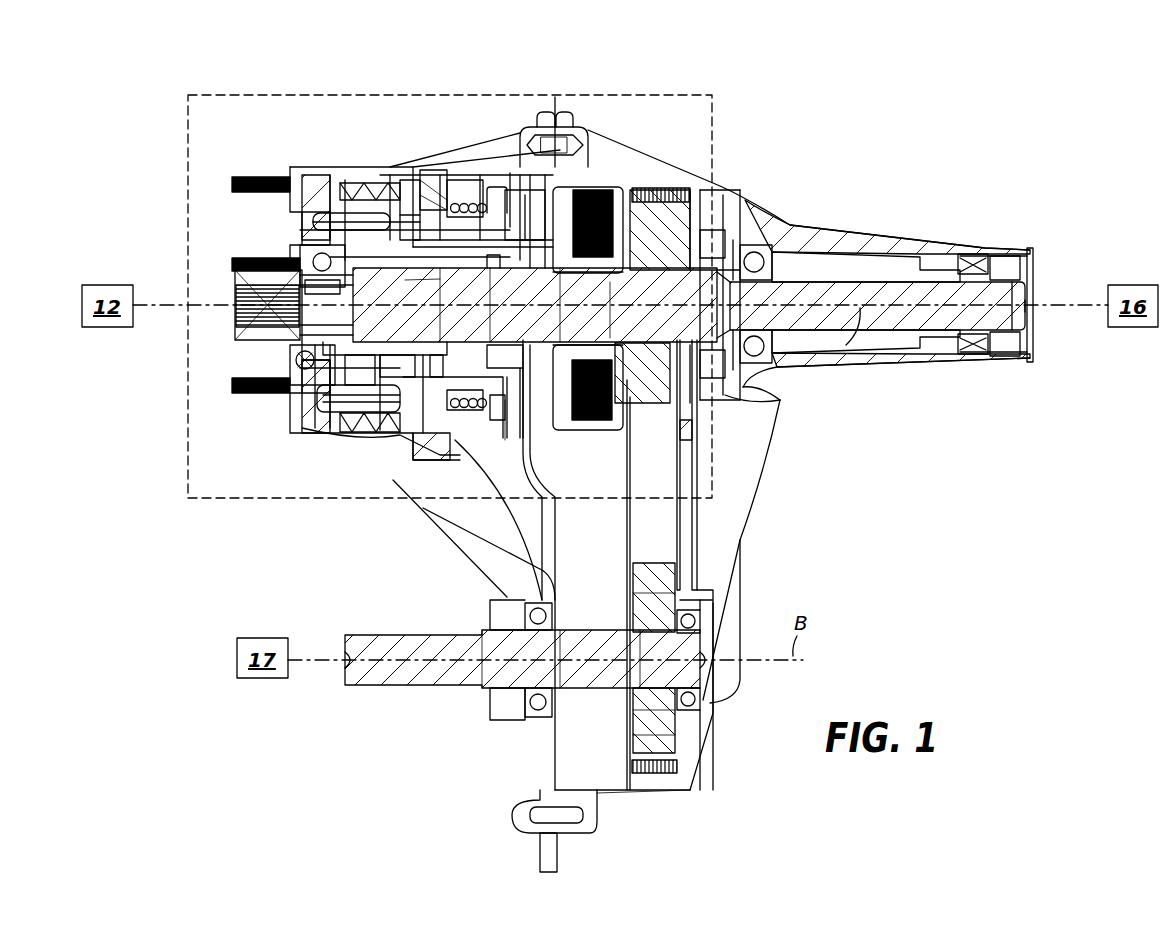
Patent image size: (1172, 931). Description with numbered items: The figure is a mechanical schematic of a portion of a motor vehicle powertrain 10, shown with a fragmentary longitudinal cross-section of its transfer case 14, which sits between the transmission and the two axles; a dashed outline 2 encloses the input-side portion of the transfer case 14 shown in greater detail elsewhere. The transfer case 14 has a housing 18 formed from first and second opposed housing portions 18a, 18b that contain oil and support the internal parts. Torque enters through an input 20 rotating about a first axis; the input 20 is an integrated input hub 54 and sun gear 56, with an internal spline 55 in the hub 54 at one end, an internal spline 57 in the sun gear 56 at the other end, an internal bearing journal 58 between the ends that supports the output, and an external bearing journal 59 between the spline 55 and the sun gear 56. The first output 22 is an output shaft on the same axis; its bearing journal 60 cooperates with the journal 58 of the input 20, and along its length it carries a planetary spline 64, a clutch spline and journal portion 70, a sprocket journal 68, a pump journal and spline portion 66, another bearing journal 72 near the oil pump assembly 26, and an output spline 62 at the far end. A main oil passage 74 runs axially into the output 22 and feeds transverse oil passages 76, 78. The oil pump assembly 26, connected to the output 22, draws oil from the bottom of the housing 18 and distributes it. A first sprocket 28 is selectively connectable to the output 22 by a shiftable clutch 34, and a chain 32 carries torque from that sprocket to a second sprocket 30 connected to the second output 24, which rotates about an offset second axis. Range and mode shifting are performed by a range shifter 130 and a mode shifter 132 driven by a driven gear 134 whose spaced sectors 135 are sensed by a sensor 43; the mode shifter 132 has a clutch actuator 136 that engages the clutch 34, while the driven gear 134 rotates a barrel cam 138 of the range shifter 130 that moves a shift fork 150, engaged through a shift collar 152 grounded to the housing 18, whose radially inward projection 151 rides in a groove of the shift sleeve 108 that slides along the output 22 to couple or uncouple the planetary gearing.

The gear assembly 2 is at (186, 150).
The motor vehicle powertrain 10 is at (1008, 118).
The transfer case 14 is at (830, 178).
The housing 18 is at (555, 108).
The first housing portion 18a is at (545, 122).
The second housing portion 18b is at (567, 122).
The input 20 is at (233, 343).
The first output 22 is at (1028, 290).
The second output 24 is at (345, 685).
The oil pump assembly 26 is at (720, 213).
The first sprocket 28 is at (645, 223).
The second sprocket 30 is at (665, 740).
The chain 32 is at (660, 200).
The clutch 34 is at (584, 185).
The vehicle sensor 43 is at (483, 200).
The input hub 54 is at (313, 265).
The internal spline 55 is at (245, 310).
The sun gear 56 is at (358, 357).
The internal spline 57 is at (353, 360).
The internal bearing journal 58 is at (320, 325).
The external bearing journal 59 is at (313, 287).
The bearing journal 60 is at (347, 360).
The output spline 62 is at (1000, 330).
The planetary spline 64 is at (367, 280).
The pump journal and spline portion 66 is at (720, 277).
The sprocket journal 68 is at (668, 365).
The clutch spline and journal portion 70 is at (597, 333).
The bearing journal 72 is at (757, 335).
The main oil passage 74 is at (742, 345).
The transverse oil passage 76 is at (392, 283).
The transverse oil passage 78 is at (612, 290).
The shift sleeve 108 is at (393, 350).
The range shifter 130 is at (453, 442).
The mode shifter 132 is at (537, 407).
The driven gear 134 is at (508, 448).
The sectors 135 is at (498, 420).
The clutch actuator 136 is at (530, 232).
The barrel cam 138 is at (440, 440).
The shift fork 150 is at (430, 243).
The radially inward projection 151 is at (385, 425).
The shift collar 152 is at (410, 190).